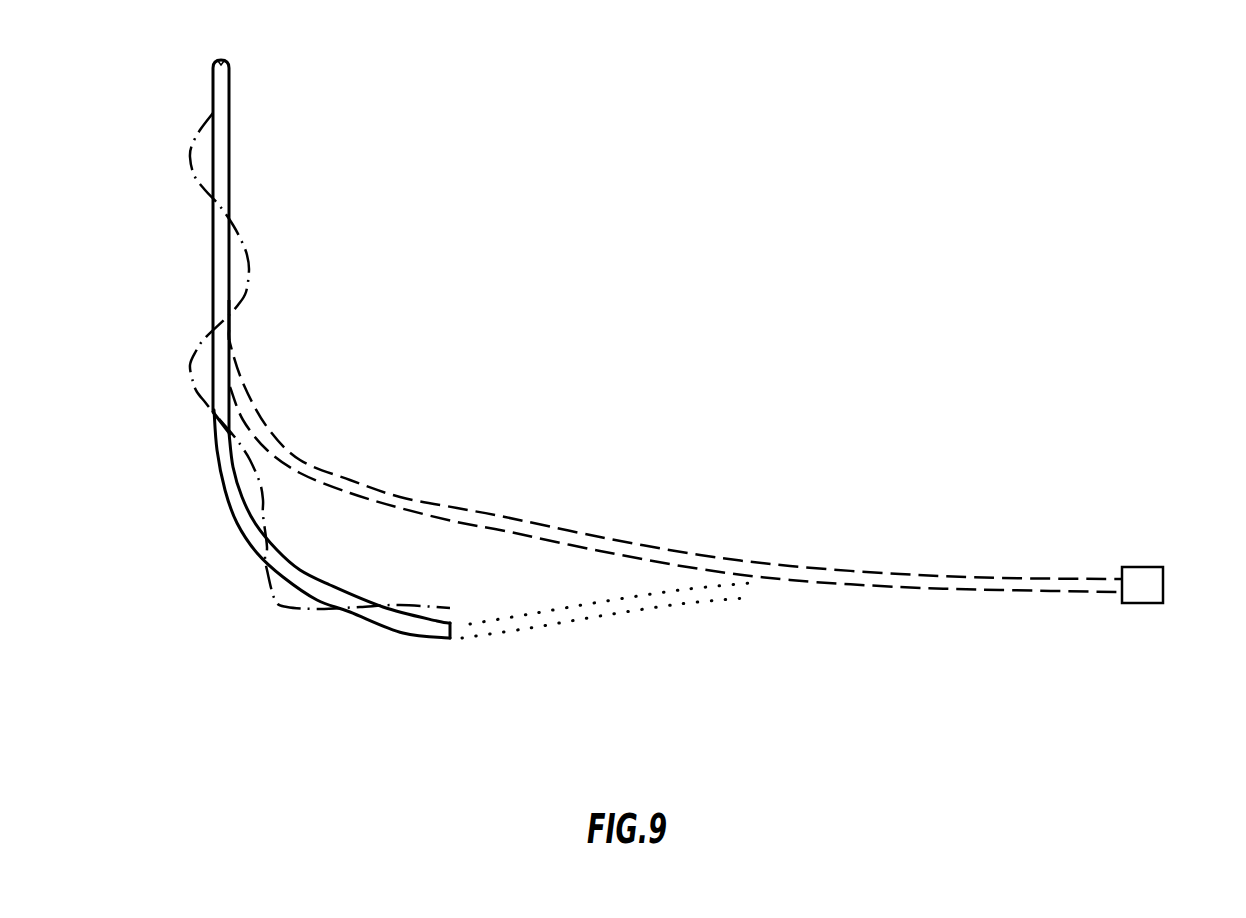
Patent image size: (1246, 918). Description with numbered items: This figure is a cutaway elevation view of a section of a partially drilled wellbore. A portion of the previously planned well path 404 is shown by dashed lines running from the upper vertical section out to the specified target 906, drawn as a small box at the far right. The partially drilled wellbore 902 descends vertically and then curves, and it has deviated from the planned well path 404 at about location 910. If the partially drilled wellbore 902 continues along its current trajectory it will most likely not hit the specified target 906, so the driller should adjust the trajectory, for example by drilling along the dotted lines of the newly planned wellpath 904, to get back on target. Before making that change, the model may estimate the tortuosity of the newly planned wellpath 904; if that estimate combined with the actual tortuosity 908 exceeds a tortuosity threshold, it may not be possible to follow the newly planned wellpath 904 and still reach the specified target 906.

The partially drilled wellbore 902 is at (236, 72).
The location 910 is at (228, 316).
The planned well path 404 is at (506, 515).
The specified target 906 is at (1141, 573).
The newly planned wellpath 904 is at (747, 602).
The actual tortuosity 908 is at (276, 594).